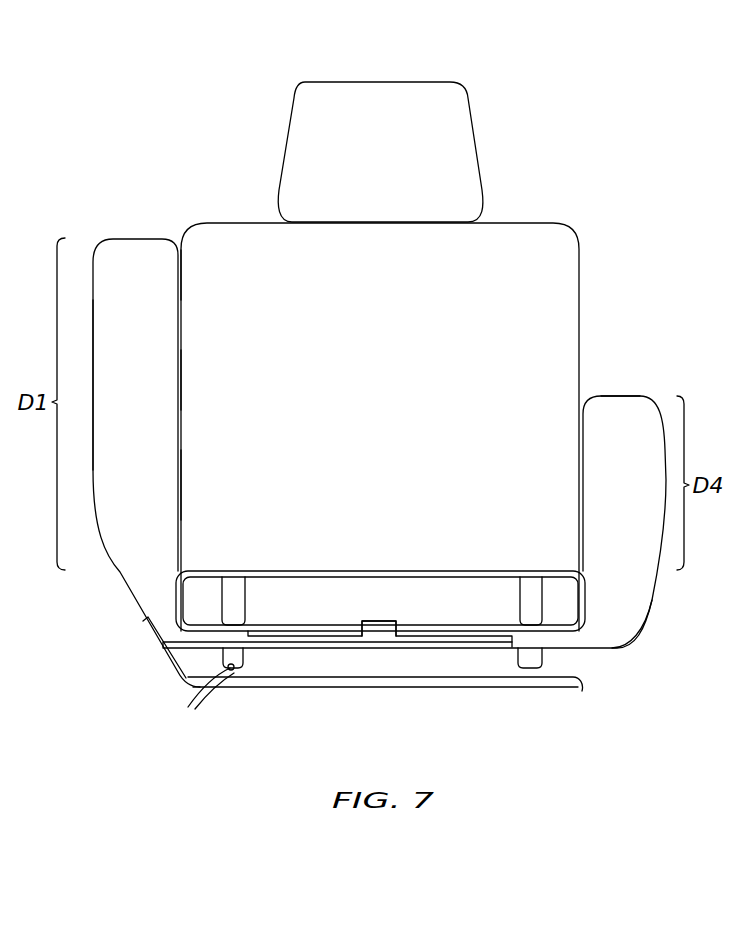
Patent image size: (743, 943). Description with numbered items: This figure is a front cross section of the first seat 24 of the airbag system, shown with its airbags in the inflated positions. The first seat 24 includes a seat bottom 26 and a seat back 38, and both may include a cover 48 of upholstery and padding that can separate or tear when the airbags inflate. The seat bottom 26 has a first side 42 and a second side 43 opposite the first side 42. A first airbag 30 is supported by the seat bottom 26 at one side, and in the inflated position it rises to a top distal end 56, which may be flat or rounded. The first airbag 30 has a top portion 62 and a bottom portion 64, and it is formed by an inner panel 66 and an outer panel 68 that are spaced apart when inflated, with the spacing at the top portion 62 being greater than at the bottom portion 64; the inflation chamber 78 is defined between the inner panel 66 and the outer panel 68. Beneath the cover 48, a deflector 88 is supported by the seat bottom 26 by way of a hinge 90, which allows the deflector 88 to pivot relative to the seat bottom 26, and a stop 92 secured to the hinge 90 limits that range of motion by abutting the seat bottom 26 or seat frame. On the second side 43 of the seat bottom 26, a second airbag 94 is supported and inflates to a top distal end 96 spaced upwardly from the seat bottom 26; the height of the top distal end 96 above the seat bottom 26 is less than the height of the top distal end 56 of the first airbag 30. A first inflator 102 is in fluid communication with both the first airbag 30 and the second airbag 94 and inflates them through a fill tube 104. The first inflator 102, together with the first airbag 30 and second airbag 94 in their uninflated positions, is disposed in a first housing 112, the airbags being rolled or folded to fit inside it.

The first seat 24 is at (588, 121).
The seat bottom 26 is at (584, 602).
The first airbag 30 is at (142, 567).
The seat back 38 is at (548, 248).
The first side 42 is at (206, 571).
The second side 43 is at (506, 571).
The cover 48 is at (378, 688).
The top distal end 56 is at (136, 238).
The top portion 62 is at (183, 270).
The bottom portion 64 is at (183, 478).
The inner panel 66 is at (183, 378).
The outer panel 68 is at (93, 333).
The inflation chamber 78 is at (126, 382).
The deflector 88 is at (158, 655).
The hinge 90 is at (222, 690).
The stop 92 is at (233, 673).
The second airbag 94 is at (651, 603).
The top distal end 96 is at (611, 396).
The first inflator 102 is at (375, 620).
The fill tube 104 is at (450, 652).
The first housing 112 is at (318, 651).